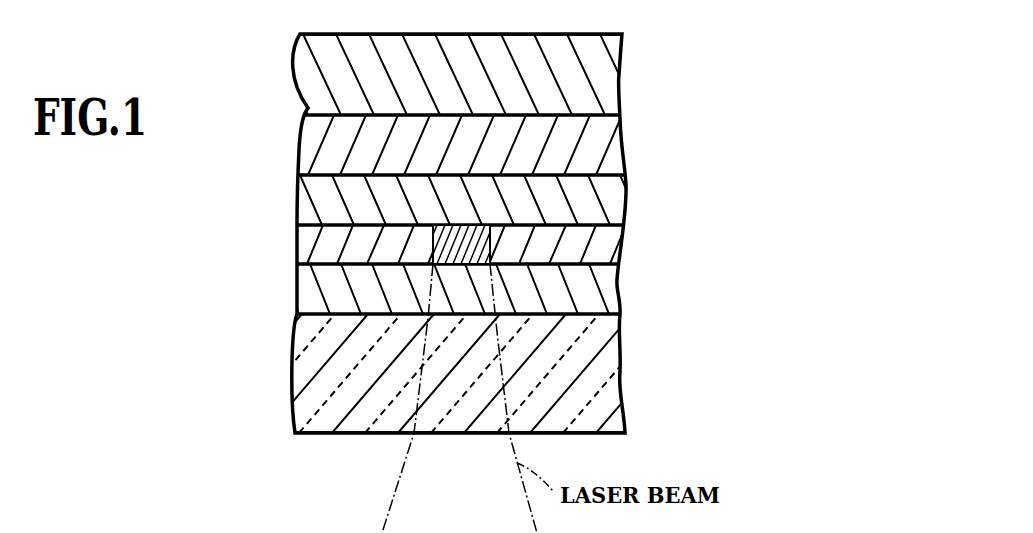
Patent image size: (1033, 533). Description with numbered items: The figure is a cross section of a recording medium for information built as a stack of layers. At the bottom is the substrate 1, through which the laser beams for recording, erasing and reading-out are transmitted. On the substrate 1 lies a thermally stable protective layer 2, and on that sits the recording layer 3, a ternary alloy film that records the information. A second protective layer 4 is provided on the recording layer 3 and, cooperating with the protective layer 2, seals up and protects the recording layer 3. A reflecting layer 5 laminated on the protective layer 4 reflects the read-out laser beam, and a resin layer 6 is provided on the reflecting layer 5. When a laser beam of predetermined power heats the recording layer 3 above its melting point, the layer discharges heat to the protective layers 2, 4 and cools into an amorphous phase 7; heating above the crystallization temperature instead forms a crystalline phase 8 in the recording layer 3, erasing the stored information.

The substrate 1 is at (603, 370).
The protective layer 2 is at (610, 288).
The recording layer 3 is at (610, 247).
The protective layer 4 is at (620, 200).
The reflecting layer 5 is at (622, 147).
The resin layer 6 is at (622, 75).
The amorphous phase 7 is at (438, 250).
The crystalline phase 8 is at (318, 230).